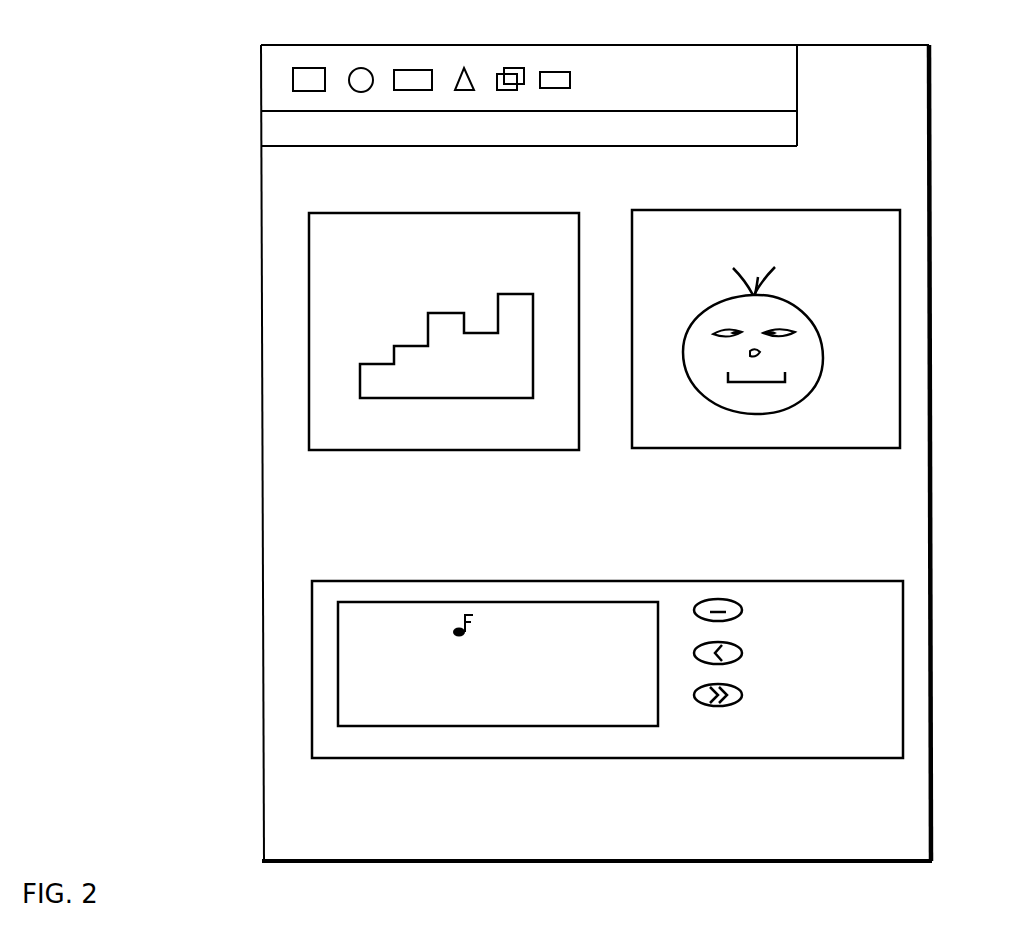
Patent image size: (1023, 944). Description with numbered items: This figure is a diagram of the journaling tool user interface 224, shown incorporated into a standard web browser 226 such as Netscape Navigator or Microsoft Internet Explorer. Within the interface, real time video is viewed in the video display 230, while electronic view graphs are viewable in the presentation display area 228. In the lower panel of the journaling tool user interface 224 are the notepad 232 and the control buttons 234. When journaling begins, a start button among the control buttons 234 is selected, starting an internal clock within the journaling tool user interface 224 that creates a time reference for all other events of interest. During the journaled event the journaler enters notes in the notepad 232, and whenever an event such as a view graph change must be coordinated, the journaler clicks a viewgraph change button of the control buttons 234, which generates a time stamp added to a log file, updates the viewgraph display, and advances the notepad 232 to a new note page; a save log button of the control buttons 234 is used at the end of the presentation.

The journaling tool user interface 224 is at (931, 518).
The web browser 226 is at (797, 88).
The presentation display area 228 is at (405, 451).
The video display 230 is at (743, 449).
The notepad 232 is at (748, 759).
The control buttons 234 is at (821, 679).